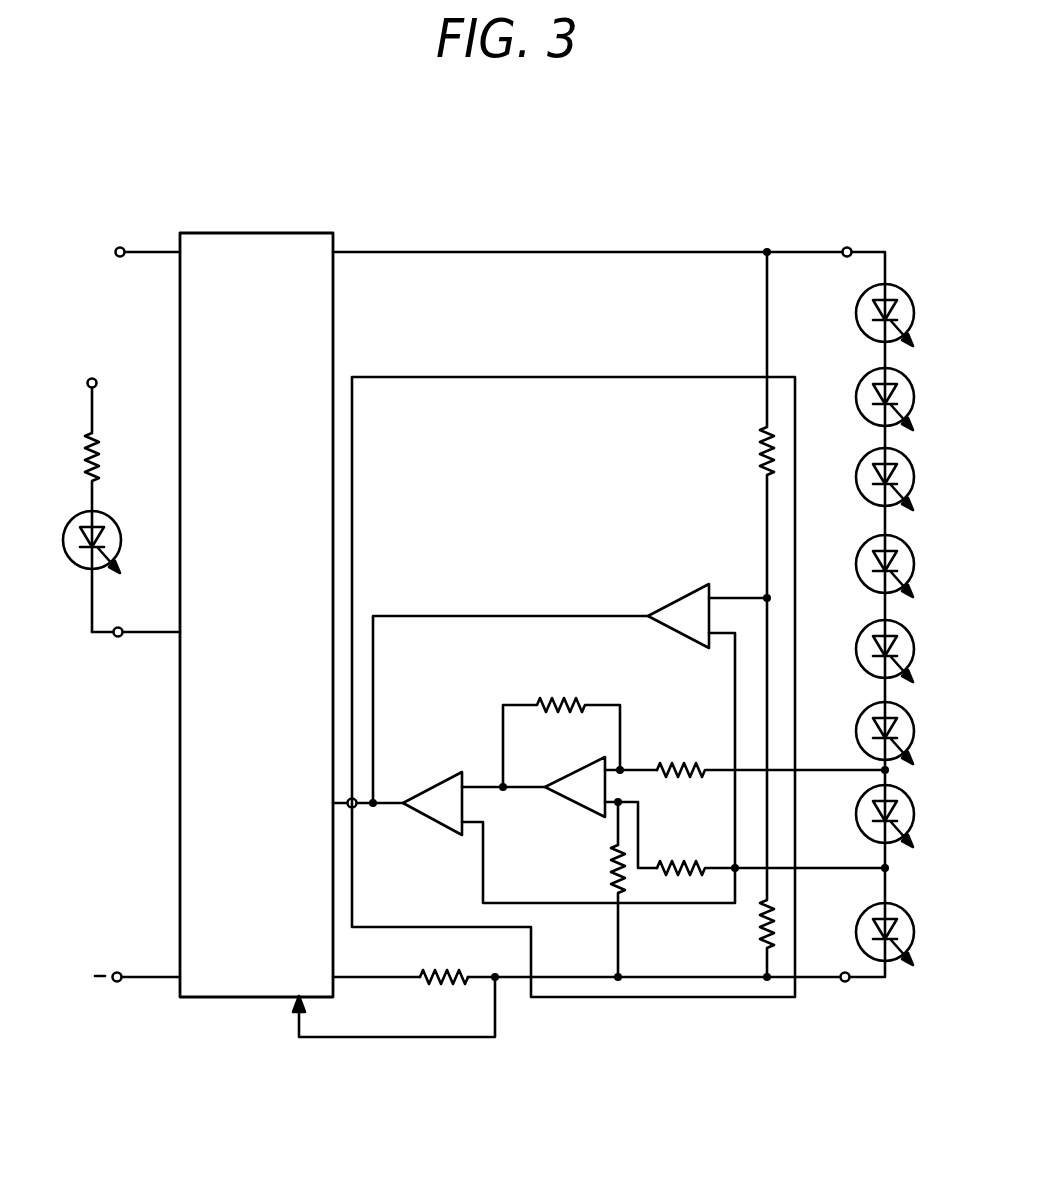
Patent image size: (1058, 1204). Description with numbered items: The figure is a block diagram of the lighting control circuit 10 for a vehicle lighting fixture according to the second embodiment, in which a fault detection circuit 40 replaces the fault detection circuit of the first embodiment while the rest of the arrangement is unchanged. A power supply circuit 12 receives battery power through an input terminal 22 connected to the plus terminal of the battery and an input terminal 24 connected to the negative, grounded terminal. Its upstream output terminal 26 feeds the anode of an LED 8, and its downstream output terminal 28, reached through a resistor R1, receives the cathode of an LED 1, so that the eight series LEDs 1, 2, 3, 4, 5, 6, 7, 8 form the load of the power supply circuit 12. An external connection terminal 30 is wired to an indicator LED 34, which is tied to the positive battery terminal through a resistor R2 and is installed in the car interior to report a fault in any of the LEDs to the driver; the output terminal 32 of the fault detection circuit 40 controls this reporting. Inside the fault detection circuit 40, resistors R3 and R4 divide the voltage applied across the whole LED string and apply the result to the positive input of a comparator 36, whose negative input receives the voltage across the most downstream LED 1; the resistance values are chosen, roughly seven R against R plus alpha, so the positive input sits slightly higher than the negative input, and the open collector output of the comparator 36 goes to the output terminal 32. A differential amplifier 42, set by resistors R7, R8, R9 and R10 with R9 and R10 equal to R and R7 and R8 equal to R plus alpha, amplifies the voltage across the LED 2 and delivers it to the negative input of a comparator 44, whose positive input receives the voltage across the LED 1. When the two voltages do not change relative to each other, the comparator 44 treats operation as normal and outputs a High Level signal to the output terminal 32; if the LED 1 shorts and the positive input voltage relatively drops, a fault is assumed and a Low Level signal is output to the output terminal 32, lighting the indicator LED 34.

The lighting control circuit 10 is at (545, 203).
The power supply circuit 12 is at (212, 233).
The input terminal 22 is at (122, 247).
The input terminal 24 is at (119, 982).
The output terminal 26 is at (848, 247).
The output terminal 28 is at (847, 982).
The external connection terminal 30 is at (116, 637).
The output terminal 32 is at (354, 808).
The LED 34 is at (78, 567).
The comparator 36 is at (676, 592).
The fault detection circuit 40 is at (573, 376).
The differential amplifier 42 is at (572, 803).
The comparator 44 is at (424, 792).
The LED 1 is at (911, 906).
The LED 2 is at (911, 793).
The LED 3 is at (911, 710).
The LED 4 is at (911, 628).
The LED 5 is at (911, 543).
The LED 6 is at (911, 456).
The LED 7 is at (911, 376).
The LED 8 is at (911, 292).
The resistor R1 is at (444, 960).
The resistor R2 is at (112, 445).
The resistor R3 is at (745, 425).
The resistor R4 is at (746, 785).
The resistor R7 is at (773, 752).
The resistor R8 is at (773, 850).
The resistor R9 is at (561, 726).
The resistor R10 is at (589, 889).